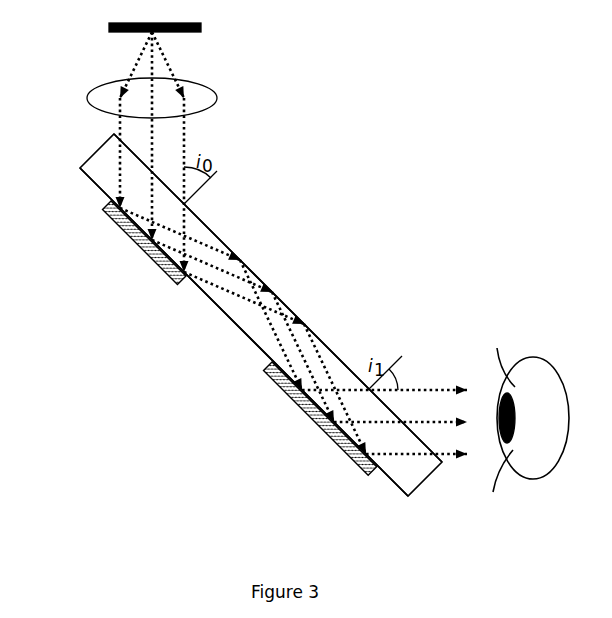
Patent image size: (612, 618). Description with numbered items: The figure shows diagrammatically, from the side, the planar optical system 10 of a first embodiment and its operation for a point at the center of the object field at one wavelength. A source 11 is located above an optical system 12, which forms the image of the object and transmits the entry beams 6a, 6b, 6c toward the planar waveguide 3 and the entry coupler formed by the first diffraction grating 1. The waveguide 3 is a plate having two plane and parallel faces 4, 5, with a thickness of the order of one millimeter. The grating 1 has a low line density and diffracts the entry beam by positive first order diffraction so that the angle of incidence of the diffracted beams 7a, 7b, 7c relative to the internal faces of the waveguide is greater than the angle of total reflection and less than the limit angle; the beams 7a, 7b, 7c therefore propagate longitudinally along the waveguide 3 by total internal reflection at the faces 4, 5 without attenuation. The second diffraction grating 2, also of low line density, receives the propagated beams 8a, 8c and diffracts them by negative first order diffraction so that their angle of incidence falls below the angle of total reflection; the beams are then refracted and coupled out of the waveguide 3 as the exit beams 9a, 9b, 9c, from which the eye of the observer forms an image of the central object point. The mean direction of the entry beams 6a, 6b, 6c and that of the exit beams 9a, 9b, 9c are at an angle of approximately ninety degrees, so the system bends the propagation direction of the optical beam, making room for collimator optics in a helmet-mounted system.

The first diffraction grating 1 is at (138, 253).
The second diffraction grating 2 is at (307, 417).
The planar waveguide 3 is at (86, 157).
The face of the waveguide 4 is at (100, 190).
The entry face of the waveguide 5 is at (318, 339).
The entry beam 6a is at (152, 140).
The entry beam 6b is at (185, 147).
The entry beam 6c is at (118, 125).
The diffracted beam 7a is at (247, 282).
The diffracted beam 7b is at (247, 301).
The diffracted beam 7c is at (203, 248).
The beam received by the second grating 8a is at (310, 366).
The beam received by the second grating 8c is at (280, 347).
The exit beam 9a is at (433, 422).
The exit beam 9b is at (460, 454).
The exit beam 9c is at (432, 389).
The planar optical system 10 is at (130, 360).
The light source 11 is at (109, 27).
The optical system 12 is at (217, 97).